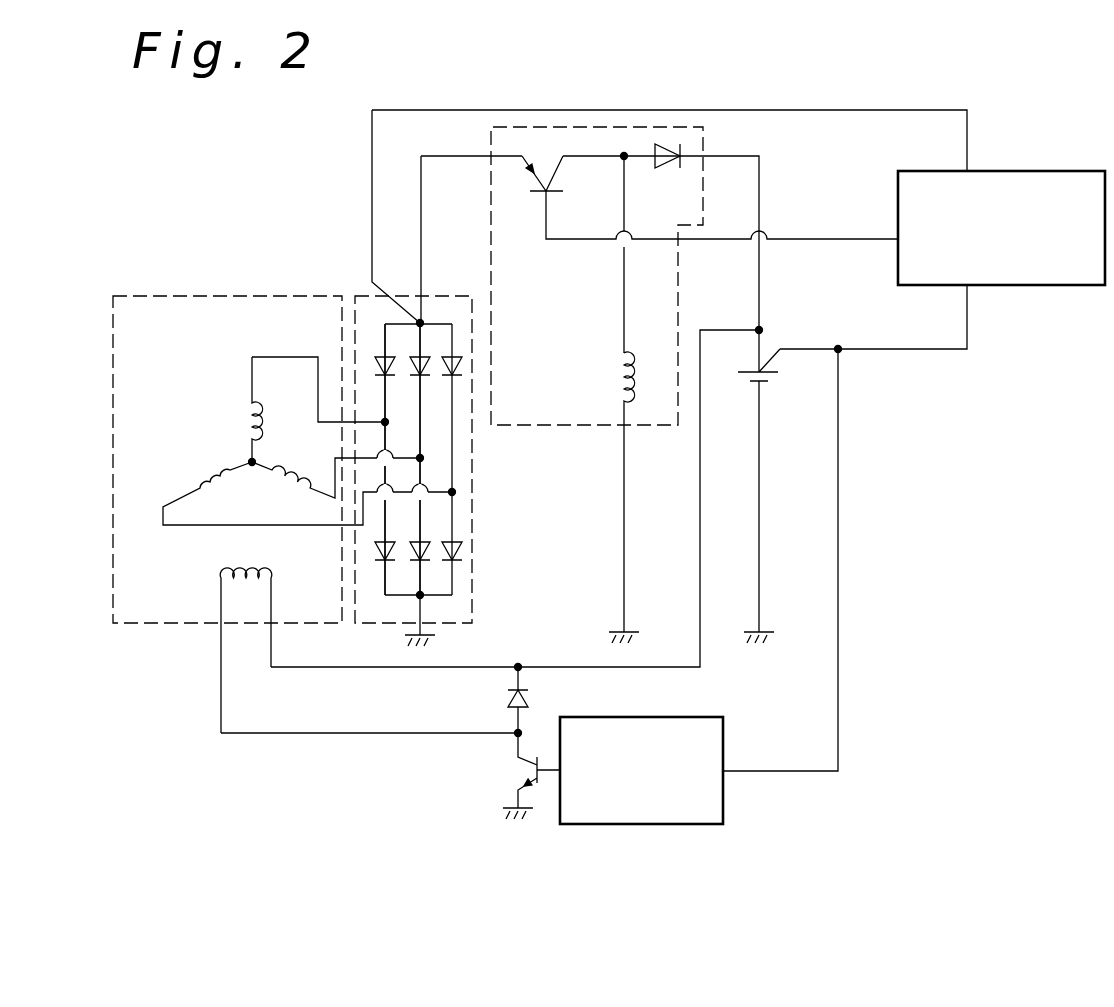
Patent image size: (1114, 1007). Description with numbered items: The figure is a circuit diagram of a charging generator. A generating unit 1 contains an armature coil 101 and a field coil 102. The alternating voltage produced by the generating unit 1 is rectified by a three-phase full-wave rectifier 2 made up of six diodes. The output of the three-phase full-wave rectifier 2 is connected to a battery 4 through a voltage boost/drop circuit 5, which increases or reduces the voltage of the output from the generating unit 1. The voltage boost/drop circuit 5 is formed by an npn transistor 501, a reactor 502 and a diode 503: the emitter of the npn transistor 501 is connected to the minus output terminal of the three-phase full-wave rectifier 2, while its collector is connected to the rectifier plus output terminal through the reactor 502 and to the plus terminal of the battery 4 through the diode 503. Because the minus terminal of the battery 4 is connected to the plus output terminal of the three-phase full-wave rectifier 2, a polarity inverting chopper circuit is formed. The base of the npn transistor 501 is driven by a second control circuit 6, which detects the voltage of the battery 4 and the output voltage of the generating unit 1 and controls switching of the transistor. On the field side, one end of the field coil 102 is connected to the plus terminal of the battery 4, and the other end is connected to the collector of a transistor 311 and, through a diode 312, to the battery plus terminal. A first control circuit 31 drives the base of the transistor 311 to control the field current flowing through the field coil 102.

The generating unit 1 is at (156, 293).
The armature coil 101 is at (282, 460).
The field coil 102 is at (232, 575).
The three-phase full-wave rectifier 2 is at (362, 293).
The voltage boost/drop circuit 5 is at (488, 126).
The npn transistor 501 is at (543, 170).
The reactor 502 is at (612, 386).
The diode 503 is at (670, 143).
The battery 4 is at (765, 352).
The second control circuit 6 is at (1046, 171).
The first control circuit 31 is at (723, 800).
The transistor 311 is at (517, 771).
The diode 312 is at (535, 695).